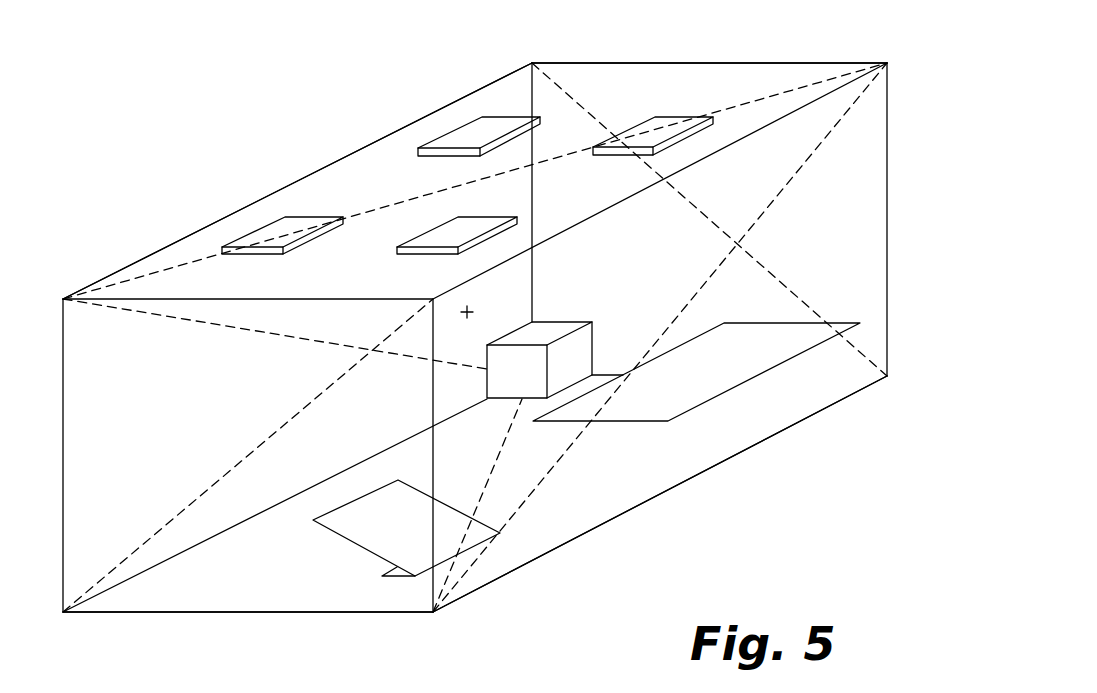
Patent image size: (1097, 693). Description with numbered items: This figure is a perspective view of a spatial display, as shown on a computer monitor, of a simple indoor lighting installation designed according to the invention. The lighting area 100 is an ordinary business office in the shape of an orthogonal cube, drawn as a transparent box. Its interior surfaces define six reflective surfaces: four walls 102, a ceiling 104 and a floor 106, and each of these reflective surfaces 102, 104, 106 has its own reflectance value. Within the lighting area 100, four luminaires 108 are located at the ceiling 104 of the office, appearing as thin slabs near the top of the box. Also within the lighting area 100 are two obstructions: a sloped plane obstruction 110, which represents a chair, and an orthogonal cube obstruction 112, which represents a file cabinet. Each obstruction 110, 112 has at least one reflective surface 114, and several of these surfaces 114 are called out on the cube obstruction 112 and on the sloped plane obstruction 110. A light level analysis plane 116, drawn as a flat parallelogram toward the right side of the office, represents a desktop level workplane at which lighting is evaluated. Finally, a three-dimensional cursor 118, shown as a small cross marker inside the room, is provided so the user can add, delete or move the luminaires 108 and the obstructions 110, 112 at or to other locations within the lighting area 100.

The lighting area 100 is at (272, 121).
The walls 102 is at (832, 128).
The ceiling 104 is at (822, 82).
The floor 106 is at (486, 487).
The luminaires 108 is at (667, 128).
The sloped plane obstruction 110 is at (337, 543).
The orthogonal cube obstruction 112 is at (589, 316).
The reflective surface 114 is at (547, 333).
The light level analysis plane 116 is at (720, 372).
The three-dimensional cursor 118 is at (474, 306).